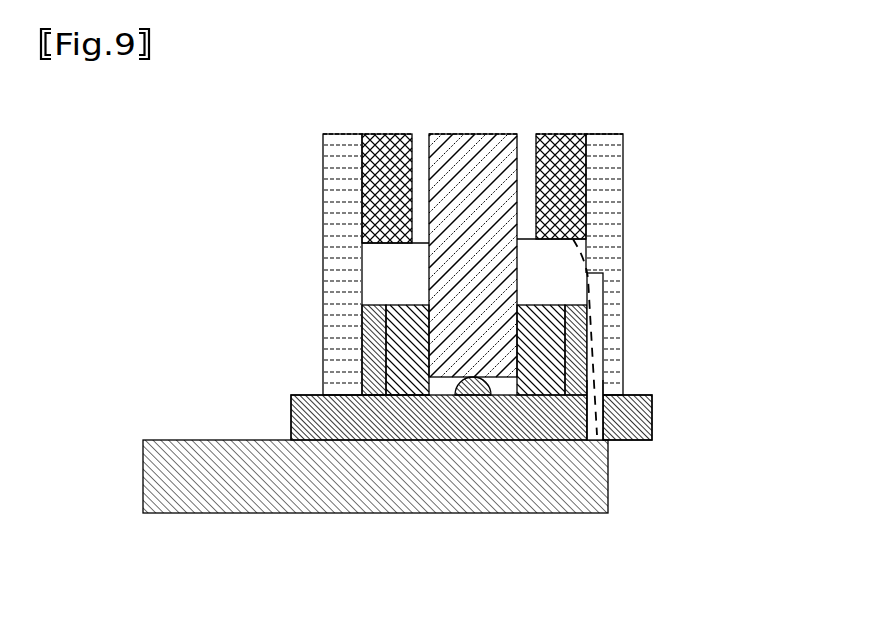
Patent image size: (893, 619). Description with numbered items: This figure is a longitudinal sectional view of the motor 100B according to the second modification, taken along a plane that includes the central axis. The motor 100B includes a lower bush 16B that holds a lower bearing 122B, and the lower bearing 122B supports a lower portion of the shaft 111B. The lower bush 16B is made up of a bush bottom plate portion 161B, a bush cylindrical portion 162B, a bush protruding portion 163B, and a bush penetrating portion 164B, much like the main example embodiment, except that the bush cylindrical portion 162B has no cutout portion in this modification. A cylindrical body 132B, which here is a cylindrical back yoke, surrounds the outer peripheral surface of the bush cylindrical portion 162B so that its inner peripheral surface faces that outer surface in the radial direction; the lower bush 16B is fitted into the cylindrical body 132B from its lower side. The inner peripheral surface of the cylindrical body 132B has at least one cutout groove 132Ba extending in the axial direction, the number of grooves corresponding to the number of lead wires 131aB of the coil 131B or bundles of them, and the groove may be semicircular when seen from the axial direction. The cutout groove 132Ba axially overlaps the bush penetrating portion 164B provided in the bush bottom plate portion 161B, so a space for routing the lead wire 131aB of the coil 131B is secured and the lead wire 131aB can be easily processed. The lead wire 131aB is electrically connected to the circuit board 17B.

The motor 100B is at (268, 148).
The shaft 111B is at (455, 150).
The coil 131B is at (582, 142).
The lower bearing 122B is at (392, 310).
The lead wire 131aB is at (575, 244).
The cylindrical body 132B is at (603, 282).
The bush cylindrical portion 162B is at (578, 328).
The cutout groove 132Ba is at (600, 368).
The bush penetrating portion 164B is at (652, 406).
The bush bottom plate portion 161B is at (645, 440).
The bush protruding portion 163B is at (480, 400).
The lower bush 16B is at (313, 390).
The circuit board 17B is at (228, 440).